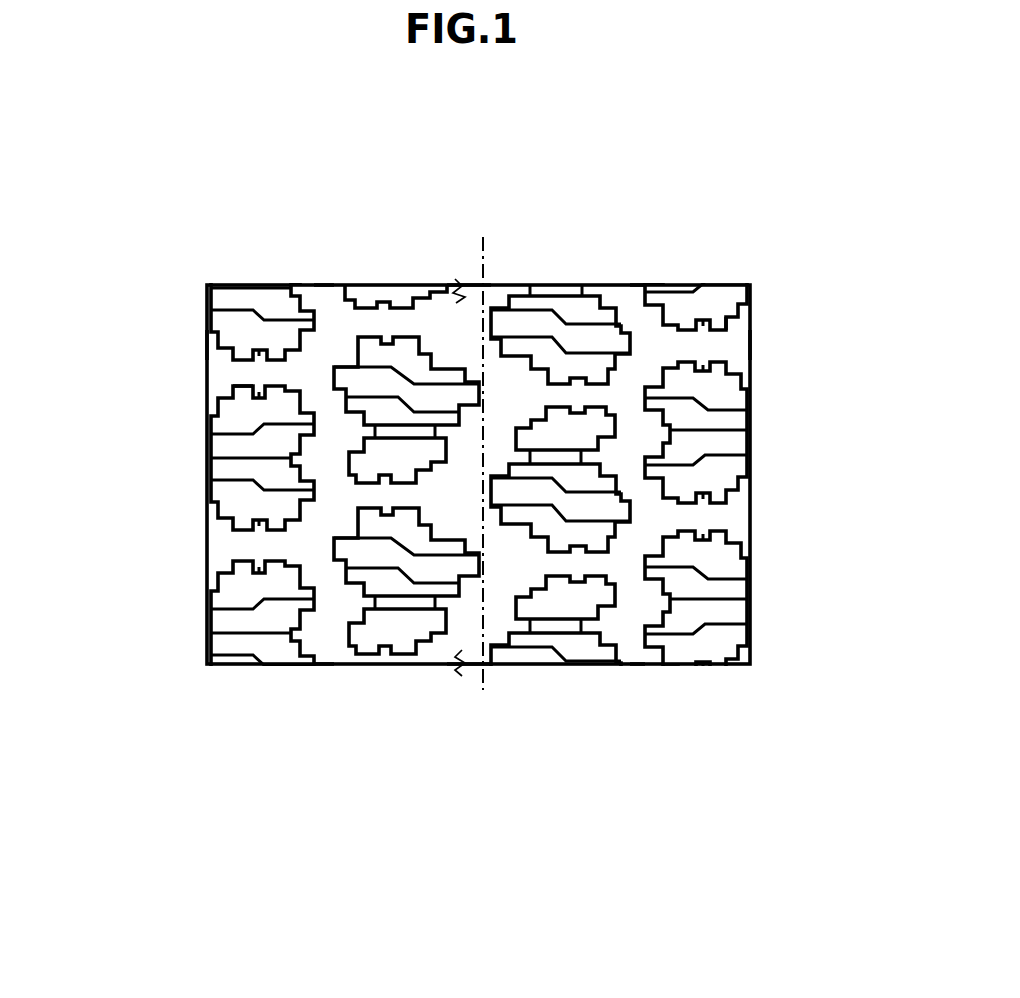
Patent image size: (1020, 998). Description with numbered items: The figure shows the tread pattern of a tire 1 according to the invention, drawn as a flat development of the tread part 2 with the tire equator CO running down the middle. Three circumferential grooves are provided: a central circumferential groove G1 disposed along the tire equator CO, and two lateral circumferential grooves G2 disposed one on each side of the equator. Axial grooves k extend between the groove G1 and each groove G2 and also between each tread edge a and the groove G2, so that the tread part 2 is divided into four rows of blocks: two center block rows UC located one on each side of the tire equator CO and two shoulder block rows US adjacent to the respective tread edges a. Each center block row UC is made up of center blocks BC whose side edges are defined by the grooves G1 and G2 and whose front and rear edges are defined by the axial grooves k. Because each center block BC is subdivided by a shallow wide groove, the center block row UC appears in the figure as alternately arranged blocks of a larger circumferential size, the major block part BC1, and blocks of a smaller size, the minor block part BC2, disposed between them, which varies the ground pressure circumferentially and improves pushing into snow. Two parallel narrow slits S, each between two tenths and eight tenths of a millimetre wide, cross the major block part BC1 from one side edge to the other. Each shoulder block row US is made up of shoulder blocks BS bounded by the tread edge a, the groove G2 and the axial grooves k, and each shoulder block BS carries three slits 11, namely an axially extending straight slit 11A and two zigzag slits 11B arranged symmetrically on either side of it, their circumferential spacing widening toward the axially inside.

The tire 1 is at (708, 210).
The tread part 2 is at (738, 253).
The tread edge a is at (207, 352).
The axial grooves k is at (251, 373).
The central circumferential groove G1 is at (457, 279).
The lateral circumferential grooves G2 is at (328, 312).
The tire equator CO is at (483, 237).
The shoulder blocks BS is at (731, 554).
The slits 11 is at (767, 592).
The straight slit 11A is at (736, 600).
The zigzag slits 11B is at (736, 578).
The shoulder block rows US is at (265, 668).
The center block rows UC is at (403, 668).
The narrow slit S is at (430, 590).
The major block part BC1 is at (385, 583).
The minor block part BC2 is at (378, 643).
The center blocks BC is at (397, 880).